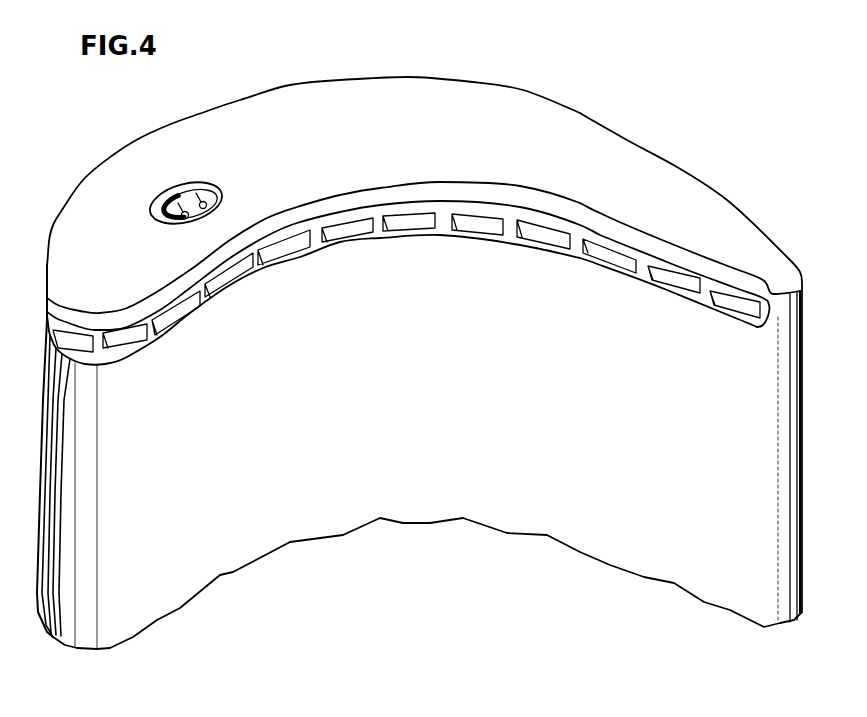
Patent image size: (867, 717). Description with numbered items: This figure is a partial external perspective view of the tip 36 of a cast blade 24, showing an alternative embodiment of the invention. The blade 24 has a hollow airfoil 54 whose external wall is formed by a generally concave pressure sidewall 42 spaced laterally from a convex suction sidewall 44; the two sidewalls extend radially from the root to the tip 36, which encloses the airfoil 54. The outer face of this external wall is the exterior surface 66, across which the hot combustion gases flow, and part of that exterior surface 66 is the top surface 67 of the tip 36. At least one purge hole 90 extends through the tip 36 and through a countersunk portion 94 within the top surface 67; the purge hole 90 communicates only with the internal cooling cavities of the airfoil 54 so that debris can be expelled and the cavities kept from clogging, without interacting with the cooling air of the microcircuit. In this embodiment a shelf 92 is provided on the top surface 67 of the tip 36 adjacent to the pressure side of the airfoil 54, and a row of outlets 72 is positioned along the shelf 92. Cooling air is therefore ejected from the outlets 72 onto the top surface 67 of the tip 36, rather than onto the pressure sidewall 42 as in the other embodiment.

The blade 24 is at (110, 138).
The tip 36 is at (580, 130).
The suction sidewall 44 is at (445, 107).
The top surface 67 is at (320, 96).
The outlets 72 is at (110, 345).
The purge hole 90 is at (181, 188).
The countersunk portion 94 is at (199, 192).
The shelf 92 is at (448, 220).
The pressure sidewall 42 is at (462, 416).
The airfoil 54 is at (302, 522).
The exterior surface 66 is at (752, 480).